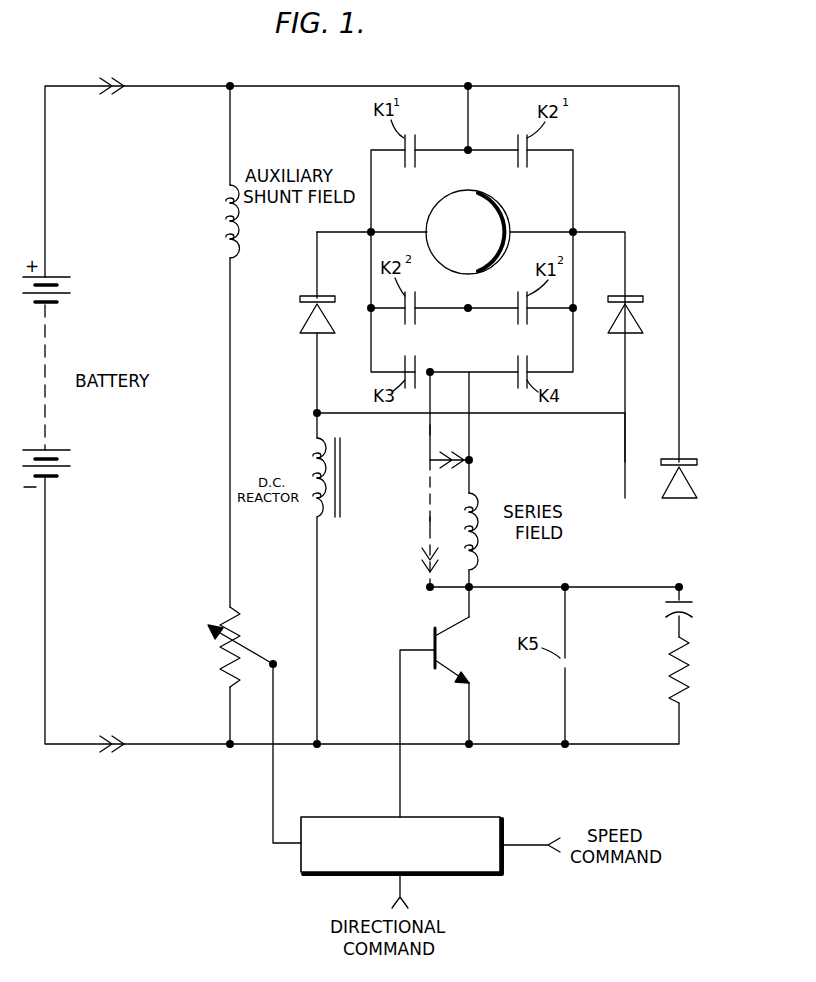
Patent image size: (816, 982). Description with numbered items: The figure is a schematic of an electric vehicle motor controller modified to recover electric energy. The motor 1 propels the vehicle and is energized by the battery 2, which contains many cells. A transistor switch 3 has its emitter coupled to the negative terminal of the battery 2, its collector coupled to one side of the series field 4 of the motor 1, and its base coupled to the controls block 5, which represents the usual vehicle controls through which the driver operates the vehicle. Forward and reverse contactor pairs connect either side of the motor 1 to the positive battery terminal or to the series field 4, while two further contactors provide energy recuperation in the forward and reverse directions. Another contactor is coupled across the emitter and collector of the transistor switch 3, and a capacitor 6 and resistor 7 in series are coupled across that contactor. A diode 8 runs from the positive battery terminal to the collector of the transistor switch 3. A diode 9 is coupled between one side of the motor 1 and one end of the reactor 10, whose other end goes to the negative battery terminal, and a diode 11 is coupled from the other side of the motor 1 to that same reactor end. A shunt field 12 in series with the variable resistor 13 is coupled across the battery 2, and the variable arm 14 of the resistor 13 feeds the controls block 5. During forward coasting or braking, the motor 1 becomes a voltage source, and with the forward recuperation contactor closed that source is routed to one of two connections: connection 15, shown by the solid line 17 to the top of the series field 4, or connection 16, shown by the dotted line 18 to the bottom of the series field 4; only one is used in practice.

The motor 1 is at (503, 210).
The battery 2 is at (48, 360).
The transistor switch 3 is at (432, 633).
The series field 4 is at (466, 508).
The controls block 5 is at (472, 815).
The capacitor 6 is at (668, 606).
The resistor 7 is at (670, 655).
The diode 8 is at (668, 469).
The diode 9 is at (300, 299).
The reactor 10 is at (312, 450).
The diode 11 is at (631, 297).
The shunt field 12 is at (226, 206).
The variable resistor 13 is at (222, 679).
The variable arm 14 is at (243, 649).
The connection 15 is at (448, 448).
The connection 16 is at (420, 568).
The solid line 17 is at (428, 430).
The dotted line 18 is at (428, 522).